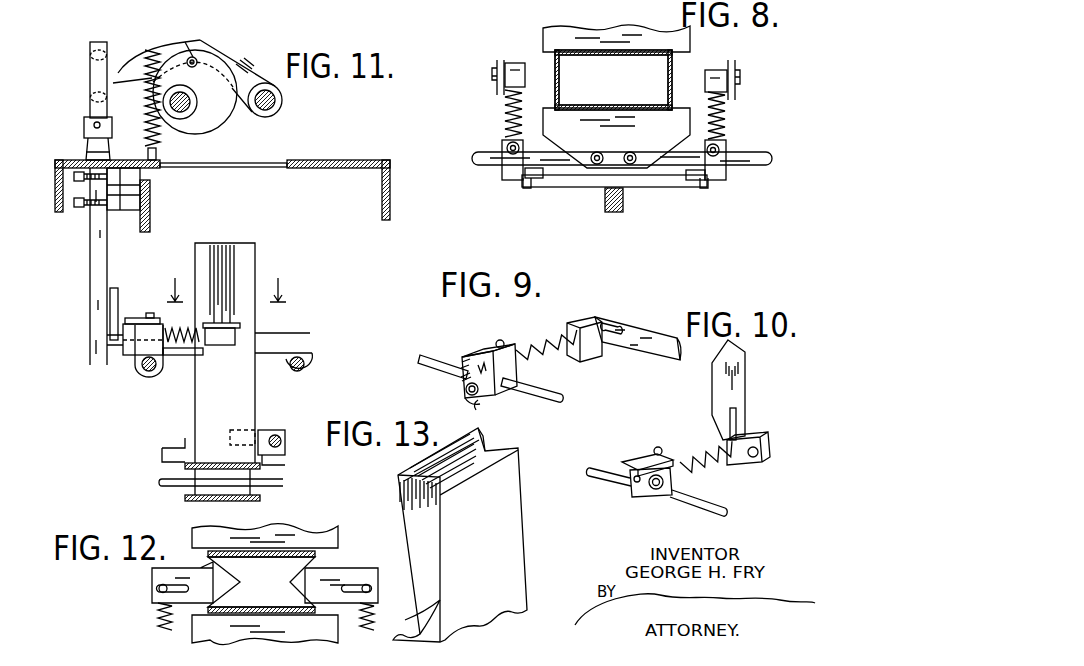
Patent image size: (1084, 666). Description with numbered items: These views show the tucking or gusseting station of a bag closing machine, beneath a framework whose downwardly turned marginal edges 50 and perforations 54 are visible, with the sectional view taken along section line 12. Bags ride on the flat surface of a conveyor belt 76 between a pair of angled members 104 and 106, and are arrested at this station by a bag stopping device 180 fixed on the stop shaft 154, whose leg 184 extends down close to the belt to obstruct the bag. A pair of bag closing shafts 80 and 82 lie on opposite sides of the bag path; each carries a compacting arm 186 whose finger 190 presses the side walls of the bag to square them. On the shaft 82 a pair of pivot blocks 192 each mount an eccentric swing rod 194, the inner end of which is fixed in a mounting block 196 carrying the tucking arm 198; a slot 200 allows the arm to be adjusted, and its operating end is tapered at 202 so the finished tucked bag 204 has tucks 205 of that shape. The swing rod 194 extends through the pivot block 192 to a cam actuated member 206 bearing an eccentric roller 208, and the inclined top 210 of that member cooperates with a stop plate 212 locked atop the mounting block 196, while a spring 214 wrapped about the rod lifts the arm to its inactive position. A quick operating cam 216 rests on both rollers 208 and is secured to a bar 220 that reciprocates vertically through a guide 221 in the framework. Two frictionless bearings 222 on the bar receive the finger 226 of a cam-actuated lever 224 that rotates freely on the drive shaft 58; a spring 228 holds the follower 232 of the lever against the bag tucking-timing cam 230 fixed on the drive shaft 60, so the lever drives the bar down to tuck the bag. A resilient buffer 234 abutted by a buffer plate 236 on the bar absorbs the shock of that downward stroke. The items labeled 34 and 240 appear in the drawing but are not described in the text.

In FIG. 11, the section line 12 is at (230, 293).
In FIG. 11, the shaft 34 is at (162, 481).
In FIG. 11, the marginal edges 50 is at (55, 190).
In FIG. 11, the perforations 54 is at (280, 162).
In FIG. 11, the operating shaft 58 is at (282, 100).
In FIG. 11, the operating shaft 60 is at (187, 110).
In FIG. 11, the conveyor belt 76 is at (223, 465).
In FIG. 11, the bag closing shaft 80 is at (304, 364).
In FIG. 8, the bag closing shaft 82 is at (760, 158).
In FIG. 9, the bag closing shaft 82 is at (564, 394).
In FIG. 10, the bag closing shaft 82 is at (722, 503).
In FIG. 11, the bag closing shaft 82 is at (149, 372).
In FIG. 11, the angled member 104 is at (280, 464).
In FIG. 11, the angled member 106 is at (162, 450).
In FIG. 11, the stop shaft 154 is at (282, 443).
In FIG. 11, the bag stopping device 180 is at (264, 430).
In FIG. 11, the leg 184 is at (232, 430).
In FIG. 8, the compacting arm 186 is at (645, 35).
In FIG. 12, the compacting arm 186 is at (296, 531).
In FIG. 11, the compacting arm 186 is at (177, 356).
In FIG. 8, the finger 190 is at (578, 46).
In FIG. 12, the finger 190 is at (223, 541).
In FIG. 11, the finger 190 is at (195, 346).
In FIG. 9, the pivot block 192 is at (510, 396).
In FIG. 10, the pivot block 192 is at (657, 498).
In FIG. 11, the pivot block 192 is at (136, 366).
In FIG. 8, the swing rod 194 is at (506, 124).
In FIG. 9, the swing rod 194 is at (459, 376).
In FIG. 10, the swing rod 194 is at (712, 464).
In FIG. 12, the swing rod 194 is at (158, 620).
In FIG. 11, the swing rod 194 is at (182, 330).
In FIG. 8, the mounting block 196 is at (521, 72).
In FIG. 9, the mounting block 196 is at (583, 356).
In FIG. 10, the mounting block 196 is at (759, 466).
In FIG. 8, the tucking arm 198 is at (497, 70).
In FIG. 9, the tucking arm 198 is at (640, 333).
In FIG. 10, the tucking arm 198 is at (745, 392).
In FIG. 12, the tucking arm 198 is at (152, 574).
In FIG. 11, the tucking arm 198 is at (238, 324).
In FIG. 9, the slot 200 is at (605, 323).
In FIG. 10, the slot 200 is at (742, 414).
In FIG. 12, the slot 200 is at (159, 590).
In FIG. 9, the tapered walls 202 is at (676, 360).
In FIG. 10, the tapered walls 202 is at (744, 351).
In FIG. 12, the tapered walls 202 is at (235, 574).
In FIG. 8, the tucked bag 204 is at (670, 81).
In FIG. 13, the tucked bag 204 is at (525, 560).
In FIG. 11, the tucked bag 204 is at (258, 270).
In FIG. 13, the tuck 205 is at (495, 442).
In FIG. 11, the tuck 205 is at (232, 259).
In FIG. 8, the cam actuated member 206 is at (541, 181).
In FIG. 9, the cam actuated member 206 is at (465, 390).
In FIG. 10, the cam actuated member 206 is at (646, 497).
In FIG. 11, the cam actuated member 206 is at (123, 342).
In FIG. 8, the roller 208 is at (523, 184).
In FIG. 9, the roller 208 is at (482, 398).
In FIG. 10, the roller 208 is at (672, 496).
In FIG. 11, the roller 208 is at (115, 344).
In FIG. 9, the top 210 is at (470, 356).
In FIG. 10, the top 210 is at (634, 480).
In FIG. 8, the stop plate 212 is at (502, 172).
In FIG. 9, the stop plate 212 is at (489, 347).
In FIG. 10, the stop plate 212 is at (640, 458).
In FIG. 11, the stop plate 212 is at (135, 318).
In FIG. 8, the spring 214 is at (505, 104).
In FIG. 9, the spring 214 is at (557, 349).
In FIG. 10, the spring 214 is at (700, 454).
In FIG. 12, the spring 214 is at (156, 612).
In FIG. 8, the quick operating cam 216 is at (581, 187).
In FIG. 11, the quick operating cam 216 is at (116, 290).
In FIG. 8, the bar 220 is at (610, 212).
In FIG. 11, the bar 220 is at (90, 270).
In FIG. 11, the guide 221 is at (82, 206).
In FIG. 11, the frictionless bearings 222 is at (90, 57).
In FIG. 11, the cam-actuated lever 224 is at (238, 70).
In FIG. 11, the finger 226 is at (118, 72).
In FIG. 11, the spring 228 is at (150, 122).
In FIG. 11, the bag tucking-timing cam 230 is at (216, 114).
In FIG. 11, the follower 232 is at (190, 57).
In FIG. 11, the buffer 234 is at (86, 151).
In FIG. 11, the buffer plate 236 is at (84, 125).
In FIG. 11, the tab 240 is at (215, 33).